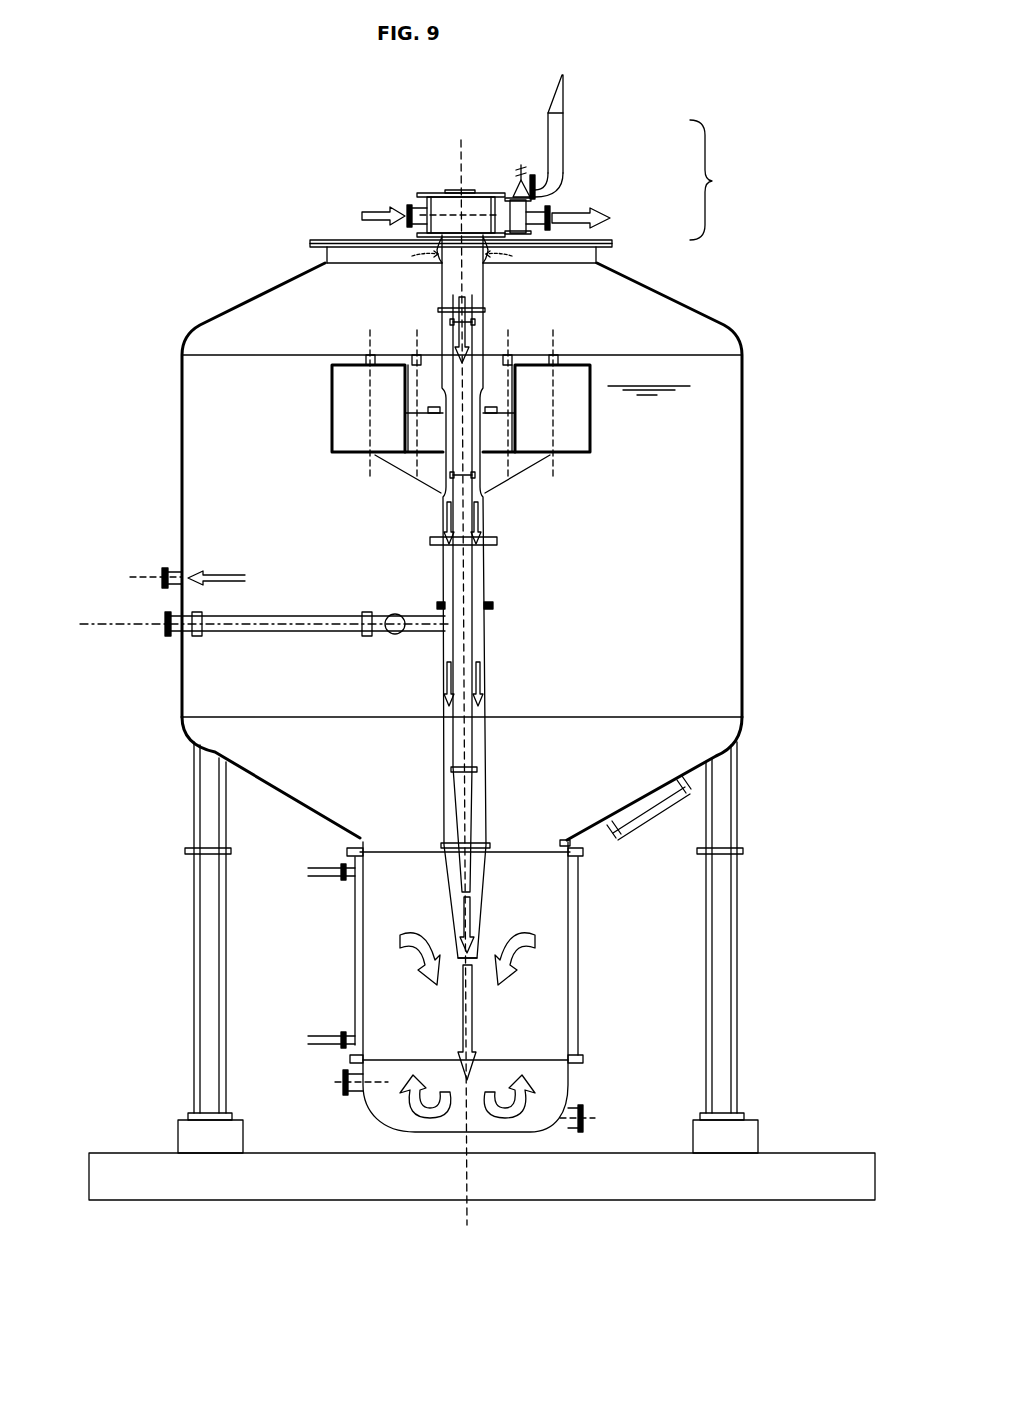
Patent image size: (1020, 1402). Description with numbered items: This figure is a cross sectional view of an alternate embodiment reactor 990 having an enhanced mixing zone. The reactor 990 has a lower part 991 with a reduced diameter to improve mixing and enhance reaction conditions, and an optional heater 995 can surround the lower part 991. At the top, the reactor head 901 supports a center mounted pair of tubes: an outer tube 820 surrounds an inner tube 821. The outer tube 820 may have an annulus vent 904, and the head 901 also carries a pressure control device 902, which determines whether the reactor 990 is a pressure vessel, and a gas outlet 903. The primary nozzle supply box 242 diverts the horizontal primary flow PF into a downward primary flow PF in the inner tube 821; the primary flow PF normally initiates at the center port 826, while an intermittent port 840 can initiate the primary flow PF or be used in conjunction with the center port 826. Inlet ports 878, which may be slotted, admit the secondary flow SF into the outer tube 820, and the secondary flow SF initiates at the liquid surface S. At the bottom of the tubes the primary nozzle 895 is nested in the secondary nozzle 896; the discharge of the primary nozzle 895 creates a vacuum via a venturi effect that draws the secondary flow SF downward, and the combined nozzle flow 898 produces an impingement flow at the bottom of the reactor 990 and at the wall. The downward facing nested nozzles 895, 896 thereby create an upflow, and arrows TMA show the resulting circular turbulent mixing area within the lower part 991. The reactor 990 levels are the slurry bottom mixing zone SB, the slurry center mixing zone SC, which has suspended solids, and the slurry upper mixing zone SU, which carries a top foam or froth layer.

The primary nozzle supply box 242 is at (485, 217).
The primary flow PF is at (400, 212).
The annulus vent 904 is at (440, 255).
The pressure control device 902 is at (553, 185).
The gas outlet 903 is at (620, 206).
The reactor head 901 is at (730, 180).
The inlet ports 878 is at (430, 385).
The liquid surface S is at (650, 387).
The slurry upper mixing zone SU is at (720, 402).
The reactor 990 is at (182, 478).
The outer tube 820 is at (487, 566).
The inner tube 821 is at (487, 583).
The slurry center mixing zone SC is at (680, 592).
The center port 826 is at (214, 579).
The intermittent port 840 is at (455, 622).
The secondary flow SF is at (490, 687).
The primary nozzle 895 is at (565, 842).
The heater 995 is at (353, 916).
The secondary nozzle 896 is at (482, 952).
The lower part 991 is at (395, 975).
The combined nozzle flow 898 is at (473, 993).
The slurry bottom mixing zone SB is at (463, 1132).
The turbulent mixing area TMA is at (530, 1103).